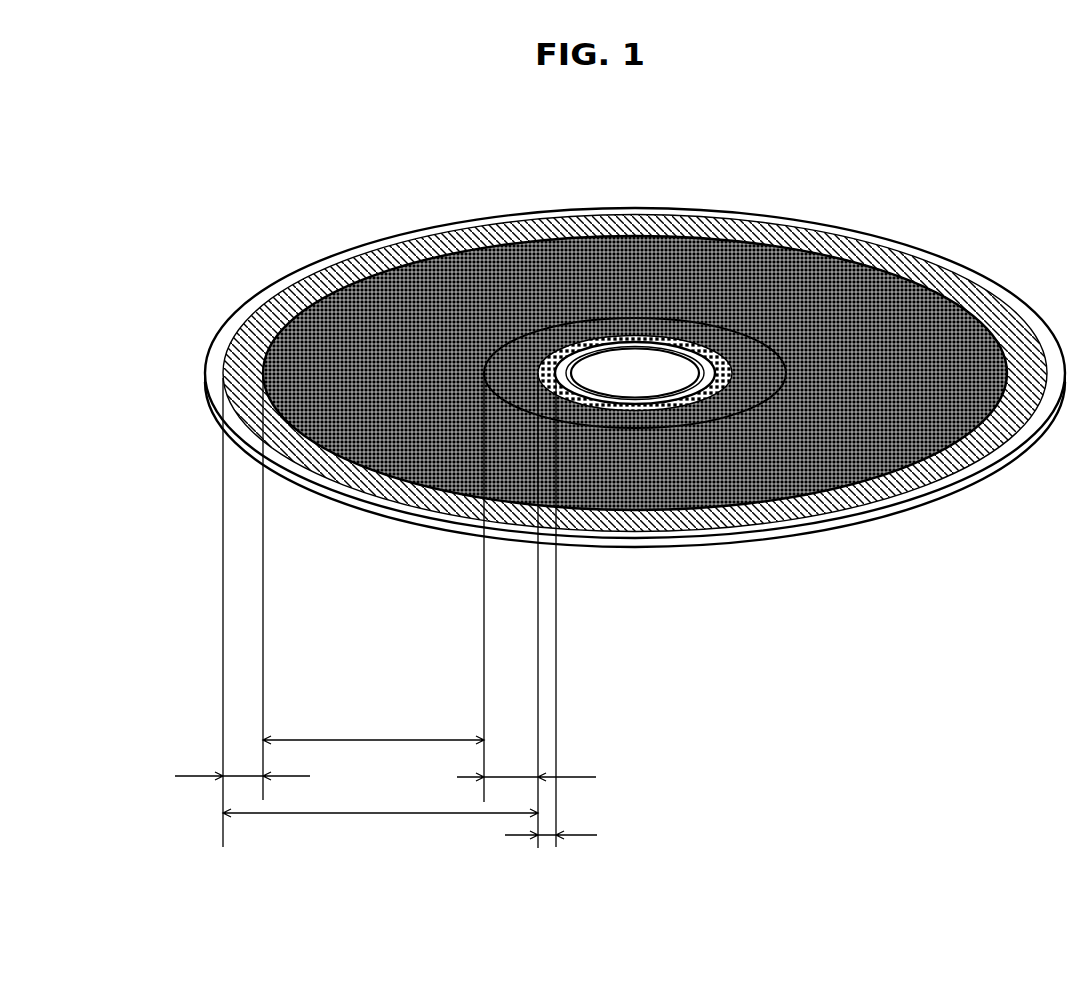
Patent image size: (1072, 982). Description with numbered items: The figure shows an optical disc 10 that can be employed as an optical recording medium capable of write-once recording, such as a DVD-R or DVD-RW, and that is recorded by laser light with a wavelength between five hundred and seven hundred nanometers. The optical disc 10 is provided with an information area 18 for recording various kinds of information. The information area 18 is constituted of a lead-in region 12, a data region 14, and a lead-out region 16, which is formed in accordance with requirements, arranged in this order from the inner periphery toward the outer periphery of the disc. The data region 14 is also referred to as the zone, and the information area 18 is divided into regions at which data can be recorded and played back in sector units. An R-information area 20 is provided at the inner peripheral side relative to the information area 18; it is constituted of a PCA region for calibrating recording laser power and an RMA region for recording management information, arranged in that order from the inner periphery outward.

The optical disc 10 is at (662, 112).
The lead-in region 12 is at (512, 775).
The data region 14 is at (300, 740).
The lead-out region 16 is at (246, 774).
The information area 18 is at (365, 812).
The R-information area 20 is at (547, 837).